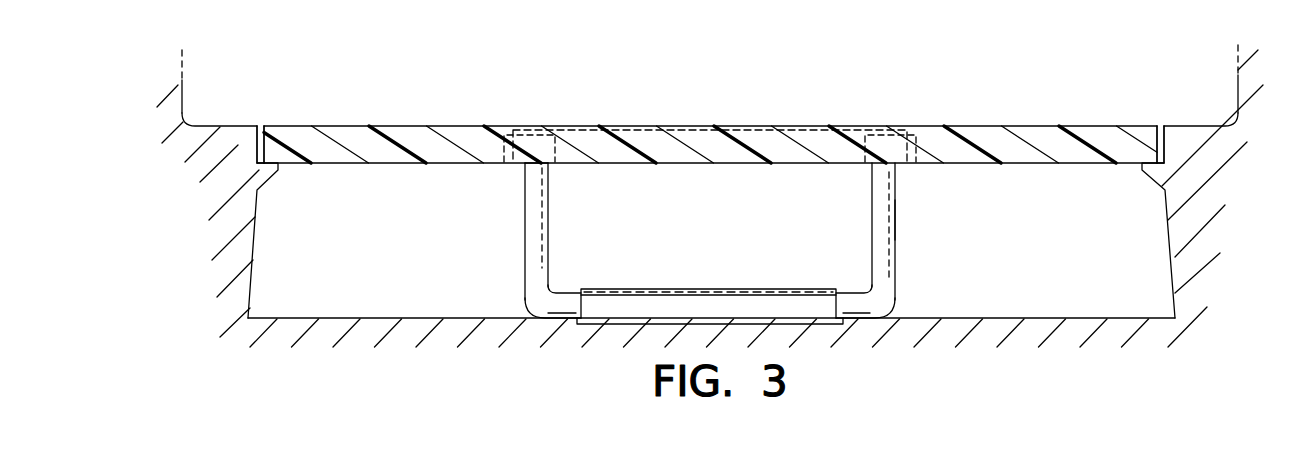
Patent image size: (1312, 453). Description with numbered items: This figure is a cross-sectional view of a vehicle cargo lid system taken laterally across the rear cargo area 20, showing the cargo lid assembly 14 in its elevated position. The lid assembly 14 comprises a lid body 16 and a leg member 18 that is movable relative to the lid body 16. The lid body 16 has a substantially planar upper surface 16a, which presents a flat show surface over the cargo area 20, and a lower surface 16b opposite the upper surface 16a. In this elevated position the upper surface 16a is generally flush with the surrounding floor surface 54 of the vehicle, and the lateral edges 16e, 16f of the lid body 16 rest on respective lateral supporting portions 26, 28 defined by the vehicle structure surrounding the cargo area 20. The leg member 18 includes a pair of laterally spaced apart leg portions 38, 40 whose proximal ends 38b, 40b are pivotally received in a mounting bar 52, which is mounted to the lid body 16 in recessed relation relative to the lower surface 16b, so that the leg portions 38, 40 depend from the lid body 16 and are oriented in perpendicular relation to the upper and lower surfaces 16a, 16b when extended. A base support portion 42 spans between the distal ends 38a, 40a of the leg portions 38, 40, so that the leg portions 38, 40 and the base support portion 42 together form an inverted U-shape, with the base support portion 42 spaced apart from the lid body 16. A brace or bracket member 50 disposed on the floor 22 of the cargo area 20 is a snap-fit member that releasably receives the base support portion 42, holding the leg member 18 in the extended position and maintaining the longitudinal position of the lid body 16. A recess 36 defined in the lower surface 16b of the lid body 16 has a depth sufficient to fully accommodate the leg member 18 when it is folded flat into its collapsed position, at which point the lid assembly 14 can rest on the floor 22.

The cargo lid assembly 14 is at (367, 94).
The lid body 16 is at (421, 116).
The upper surface 16a is at (472, 125).
The lower surface 16b is at (390, 164).
The lateral edge 16e is at (258, 148).
The lateral edge 16f is at (1161, 152).
The leg member 18 is at (911, 244).
The rear cargo area 20 is at (1002, 180).
The floor 22 is at (1038, 315).
The lateral supporting portion 26 is at (275, 162).
The lateral supporting portion 28 is at (1154, 155).
The recess 36 is at (511, 162).
The leg portion 38 is at (540, 220).
The distal end 38a is at (531, 289).
The proximal end 38b is at (548, 168).
The leg portion 40 is at (872, 200).
The distal end 40a is at (884, 303).
The proximal end 40b is at (893, 168).
The base support portion 42 is at (571, 298).
The bracket member 50 is at (712, 303).
The mounting bar 52 is at (788, 150).
The surrounding floor surface 54 is at (200, 122).